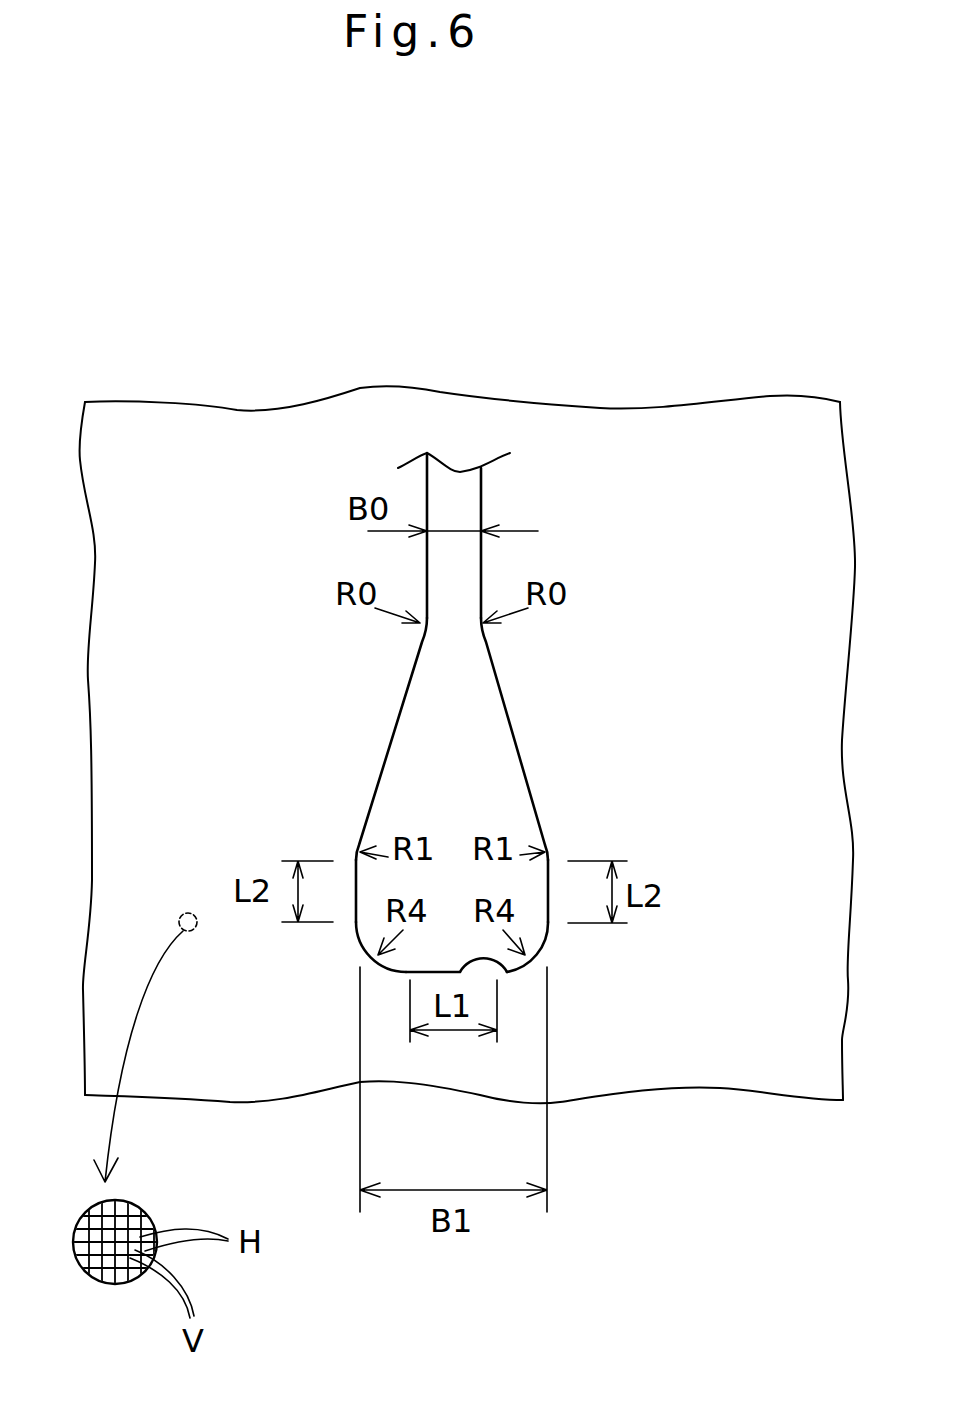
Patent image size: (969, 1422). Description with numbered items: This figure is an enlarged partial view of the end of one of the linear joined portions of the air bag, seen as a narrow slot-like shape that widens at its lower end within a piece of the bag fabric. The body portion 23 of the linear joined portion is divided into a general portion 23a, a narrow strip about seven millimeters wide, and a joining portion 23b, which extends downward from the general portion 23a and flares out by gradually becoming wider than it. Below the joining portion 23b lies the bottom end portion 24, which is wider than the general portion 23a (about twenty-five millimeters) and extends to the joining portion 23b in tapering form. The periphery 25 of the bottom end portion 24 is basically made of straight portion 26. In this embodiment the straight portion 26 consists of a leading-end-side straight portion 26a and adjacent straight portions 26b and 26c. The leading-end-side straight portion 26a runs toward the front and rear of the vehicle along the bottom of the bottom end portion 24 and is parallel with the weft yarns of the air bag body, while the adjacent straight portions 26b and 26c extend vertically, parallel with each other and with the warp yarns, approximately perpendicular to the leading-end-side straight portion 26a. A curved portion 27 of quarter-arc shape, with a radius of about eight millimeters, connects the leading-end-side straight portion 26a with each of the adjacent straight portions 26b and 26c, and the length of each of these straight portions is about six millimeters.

The body portion 23 is at (566, 656).
The general portion 23a is at (468, 500).
The joining portion 23b is at (470, 690).
The bottom end portion 24 is at (473, 967).
The periphery 25 is at (545, 940).
The straight portion 26 is at (446, 961).
The leading-end-side straight portion 26a is at (507, 972).
The adjacent straight portion 26b is at (358, 884).
The adjacent straight portion 26c is at (547, 886).
The curved portion 27 is at (363, 943).